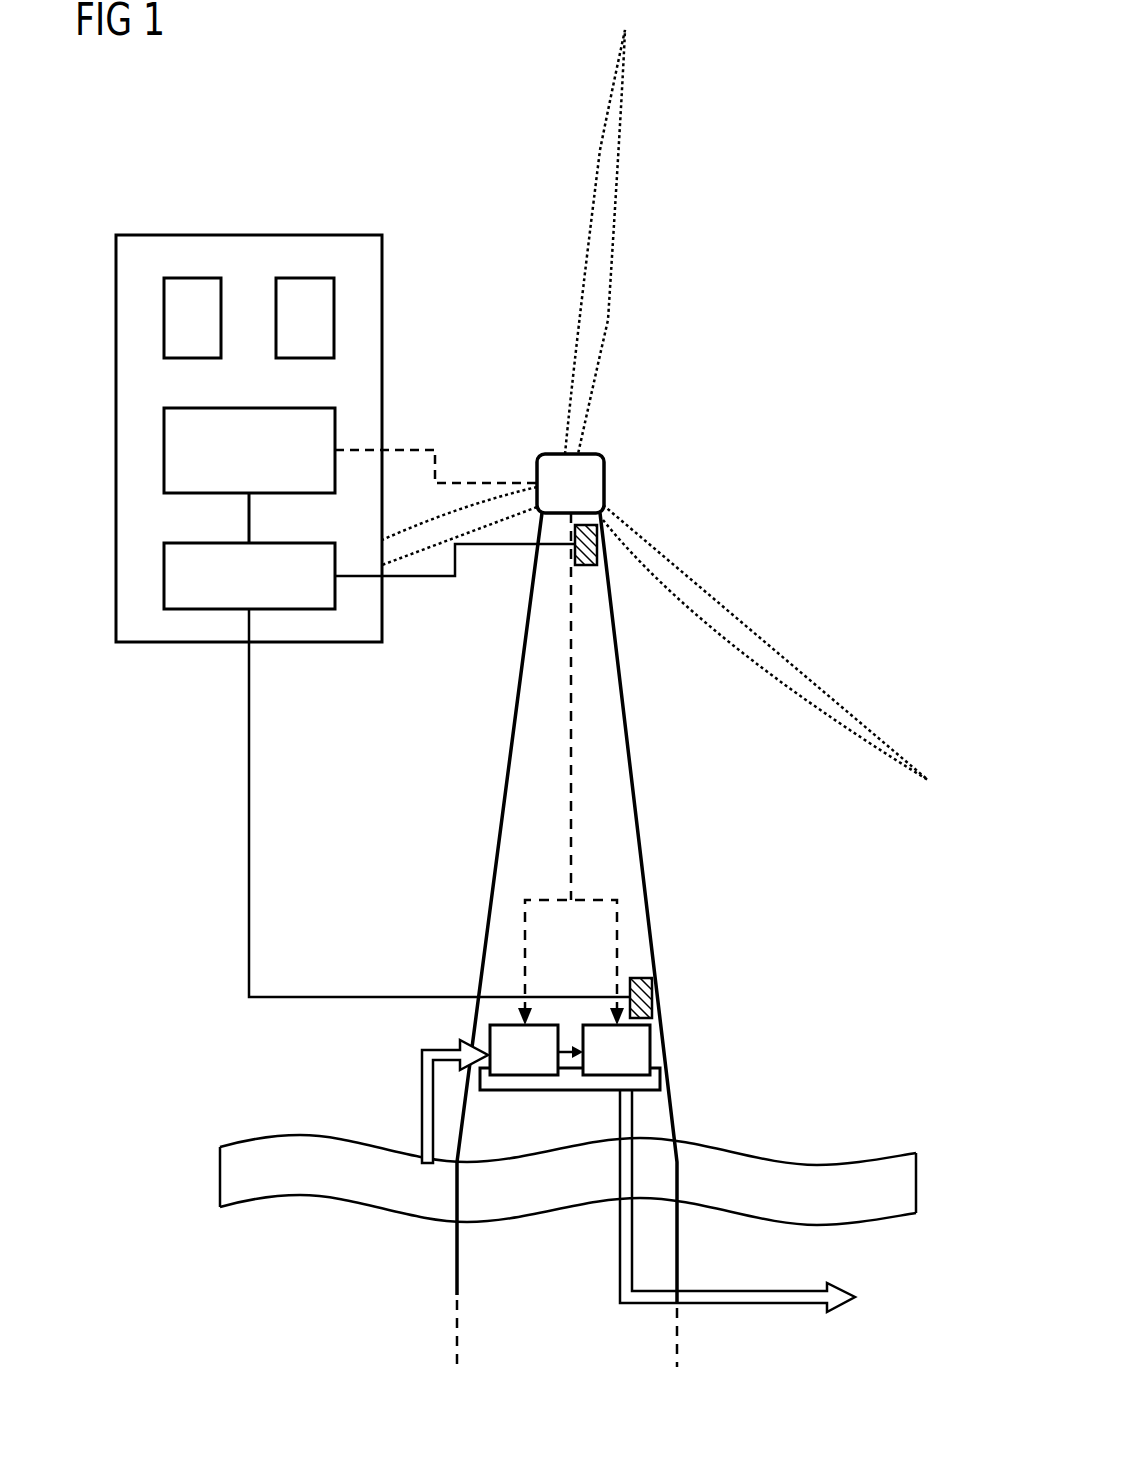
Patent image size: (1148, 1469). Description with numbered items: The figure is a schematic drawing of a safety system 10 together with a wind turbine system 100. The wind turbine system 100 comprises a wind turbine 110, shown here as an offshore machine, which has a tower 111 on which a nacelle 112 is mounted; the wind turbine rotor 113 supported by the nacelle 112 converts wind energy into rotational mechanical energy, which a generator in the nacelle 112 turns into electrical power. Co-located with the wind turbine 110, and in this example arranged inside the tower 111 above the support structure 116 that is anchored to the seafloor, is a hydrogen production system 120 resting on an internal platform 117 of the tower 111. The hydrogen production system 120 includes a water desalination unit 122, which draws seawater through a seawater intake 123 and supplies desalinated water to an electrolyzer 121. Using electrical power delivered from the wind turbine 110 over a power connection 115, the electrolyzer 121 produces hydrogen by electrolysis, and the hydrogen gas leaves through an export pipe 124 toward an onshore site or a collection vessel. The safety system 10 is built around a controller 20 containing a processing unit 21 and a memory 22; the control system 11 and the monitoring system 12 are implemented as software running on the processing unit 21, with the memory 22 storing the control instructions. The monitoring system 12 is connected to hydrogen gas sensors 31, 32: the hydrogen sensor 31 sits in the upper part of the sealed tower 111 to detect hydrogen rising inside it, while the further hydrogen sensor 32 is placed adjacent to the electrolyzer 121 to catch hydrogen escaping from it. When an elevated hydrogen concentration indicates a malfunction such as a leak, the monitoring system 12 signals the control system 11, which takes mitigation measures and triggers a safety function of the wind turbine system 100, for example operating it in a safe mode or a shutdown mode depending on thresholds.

The safety system 10 is at (352, 545).
The controller 20 is at (247, 235).
The processing unit 21 is at (192, 278).
The memory 22 is at (306, 278).
The control system 11 is at (164, 452).
The monitoring system 12 is at (164, 578).
The wind turbine system 100 is at (574, 704).
The wind turbine 110 is at (655, 405).
The tower 111 is at (630, 737).
The nacelle 112 is at (604, 470).
The wind turbine rotor 113 is at (585, 305).
The power connection 115 is at (572, 847).
The support structure 116 is at (457, 1265).
The internal platform 117 is at (558, 1090).
The hydrogen production system 120 is at (597, 1202).
The electrolyzer 121 is at (600, 1090).
The water desalination unit 122 is at (522, 1090).
The seawater intake 123 is at (422, 1110).
The export pipe 124 is at (763, 1305).
The hydrogen sensor 31 is at (591, 565).
The hydrogen sensor 32 is at (653, 995).